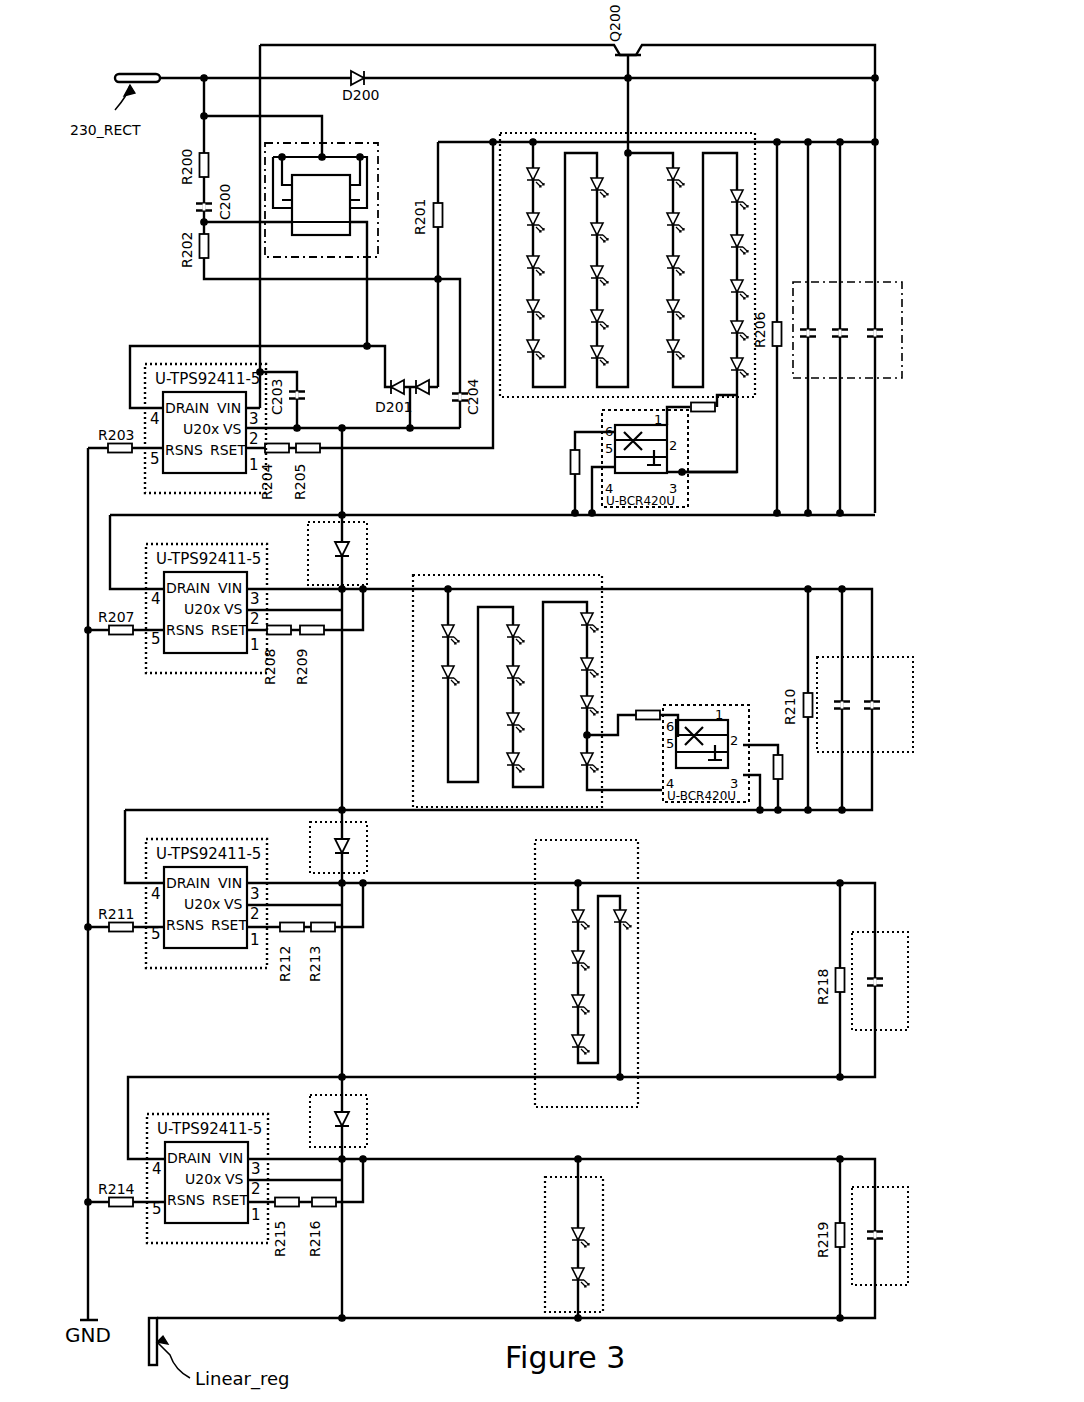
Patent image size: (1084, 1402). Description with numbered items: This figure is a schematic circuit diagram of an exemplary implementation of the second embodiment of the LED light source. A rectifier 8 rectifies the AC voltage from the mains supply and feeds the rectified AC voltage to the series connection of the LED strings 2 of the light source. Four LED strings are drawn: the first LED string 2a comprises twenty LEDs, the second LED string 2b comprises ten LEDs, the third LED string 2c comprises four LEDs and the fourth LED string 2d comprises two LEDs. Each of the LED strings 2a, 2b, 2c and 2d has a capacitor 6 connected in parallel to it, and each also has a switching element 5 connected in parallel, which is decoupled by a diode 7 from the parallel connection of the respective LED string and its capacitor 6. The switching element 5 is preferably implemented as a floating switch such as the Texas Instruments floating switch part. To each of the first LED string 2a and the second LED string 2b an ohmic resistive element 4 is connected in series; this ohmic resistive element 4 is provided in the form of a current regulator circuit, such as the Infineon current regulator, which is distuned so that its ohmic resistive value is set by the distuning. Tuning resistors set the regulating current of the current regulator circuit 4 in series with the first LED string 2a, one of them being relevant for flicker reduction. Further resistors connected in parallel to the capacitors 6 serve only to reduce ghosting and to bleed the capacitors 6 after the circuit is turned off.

The LED string 2 is at (400, 393).
The first LED string 2a is at (745, 133).
The second LED string 2b is at (605, 635).
The third LED string 2c is at (640, 986).
The fourth LED string 2d is at (605, 1265).
The ohmic resistive element 4 is at (690, 492).
The switching element 5 is at (147, 390).
The capacitor 6 is at (893, 282).
The diode 7 is at (367, 549).
The rectifier 8 is at (372, 150).